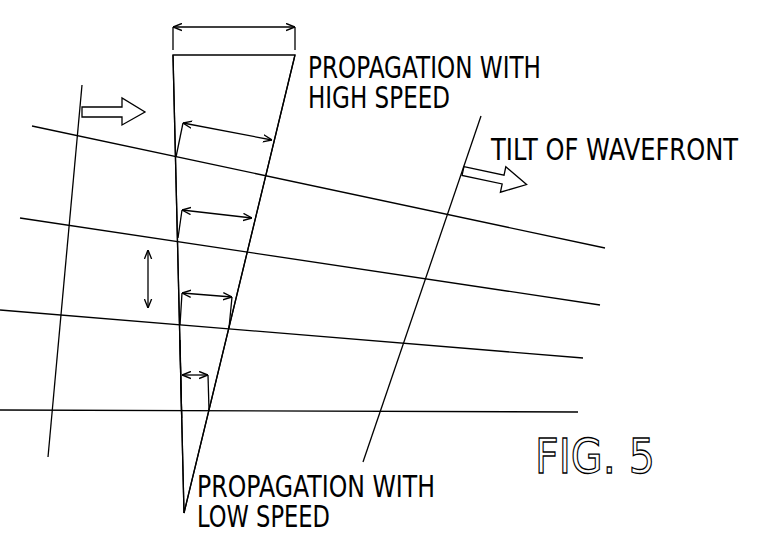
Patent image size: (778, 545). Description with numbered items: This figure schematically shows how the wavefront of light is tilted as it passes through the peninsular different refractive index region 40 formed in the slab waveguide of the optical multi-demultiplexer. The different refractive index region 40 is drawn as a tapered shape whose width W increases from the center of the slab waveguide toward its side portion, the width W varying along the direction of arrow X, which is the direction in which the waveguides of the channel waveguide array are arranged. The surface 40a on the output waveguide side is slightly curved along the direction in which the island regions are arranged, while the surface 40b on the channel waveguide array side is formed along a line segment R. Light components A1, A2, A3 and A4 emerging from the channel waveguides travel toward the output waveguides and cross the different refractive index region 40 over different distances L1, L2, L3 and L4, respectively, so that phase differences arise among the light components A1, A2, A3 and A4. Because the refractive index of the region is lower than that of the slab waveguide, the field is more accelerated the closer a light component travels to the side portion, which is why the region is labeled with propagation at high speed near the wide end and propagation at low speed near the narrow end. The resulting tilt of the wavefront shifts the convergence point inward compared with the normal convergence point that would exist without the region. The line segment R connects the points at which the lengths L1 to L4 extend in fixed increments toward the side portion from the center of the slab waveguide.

The different refractive index region 40 is at (182, 77).
The surface of the different refractive index region on the output waveguide side 40a is at (260, 204).
The surface of the different refractive index region on the channel waveguide array 40b is at (178, 195).
The light component A1 is at (308, 408).
The light component A2 is at (333, 338).
The light component A3 is at (379, 271).
The light component A4 is at (398, 204).
The distance traveled within the different refractive index region L1 is at (196, 376).
The distance traveled within the different refractive index region L2 is at (206, 292).
The distance traveled within the different refractive index region L3 is at (215, 209).
The distance traveled within the different refractive index region L4 is at (224, 127).
The width of the different refractive index region W is at (234, 25).
The direction of arrangement of the waveguides X is at (145, 282).
The line segment R is at (180, 348).